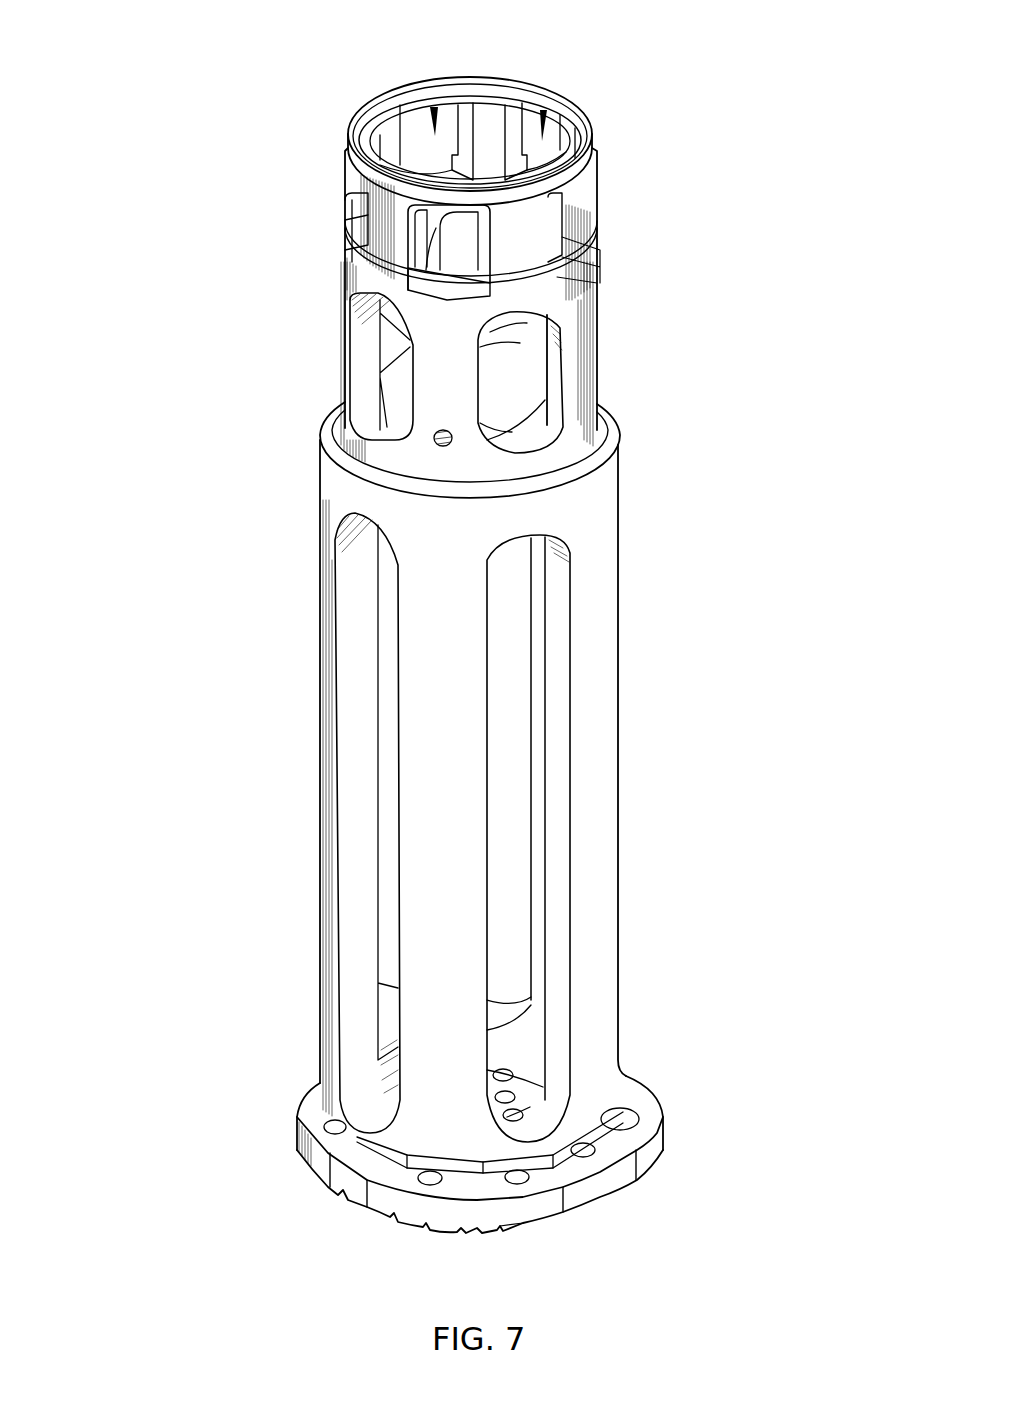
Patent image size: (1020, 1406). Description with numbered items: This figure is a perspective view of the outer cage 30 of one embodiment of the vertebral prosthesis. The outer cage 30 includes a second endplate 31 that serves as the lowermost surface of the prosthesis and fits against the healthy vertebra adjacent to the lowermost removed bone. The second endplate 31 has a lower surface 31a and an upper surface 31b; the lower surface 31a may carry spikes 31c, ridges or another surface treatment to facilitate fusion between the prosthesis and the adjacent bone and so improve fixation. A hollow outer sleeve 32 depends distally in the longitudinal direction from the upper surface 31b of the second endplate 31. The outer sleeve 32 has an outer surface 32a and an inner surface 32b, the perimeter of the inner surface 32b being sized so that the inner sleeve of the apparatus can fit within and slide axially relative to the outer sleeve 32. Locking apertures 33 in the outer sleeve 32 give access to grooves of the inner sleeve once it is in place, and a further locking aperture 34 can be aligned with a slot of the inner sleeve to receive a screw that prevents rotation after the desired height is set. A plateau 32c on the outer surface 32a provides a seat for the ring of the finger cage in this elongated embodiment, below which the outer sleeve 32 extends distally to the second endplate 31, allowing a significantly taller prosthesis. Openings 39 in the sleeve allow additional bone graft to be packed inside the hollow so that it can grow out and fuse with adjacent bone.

The outer cage 30 is at (178, 650).
The second endplate 31 is at (378, 1210).
The lower surface 31a is at (592, 1195).
The upper surface 31b is at (632, 1097).
The spikes 31c is at (536, 1223).
The outer sleeve 32 is at (338, 282).
The outer surface 32a is at (573, 300).
The inner surface 32b is at (488, 150).
The plateau 32c is at (605, 437).
The locking apertures 33 is at (434, 107).
The locking aperture 34 is at (432, 442).
The openings 39 is at (545, 373).